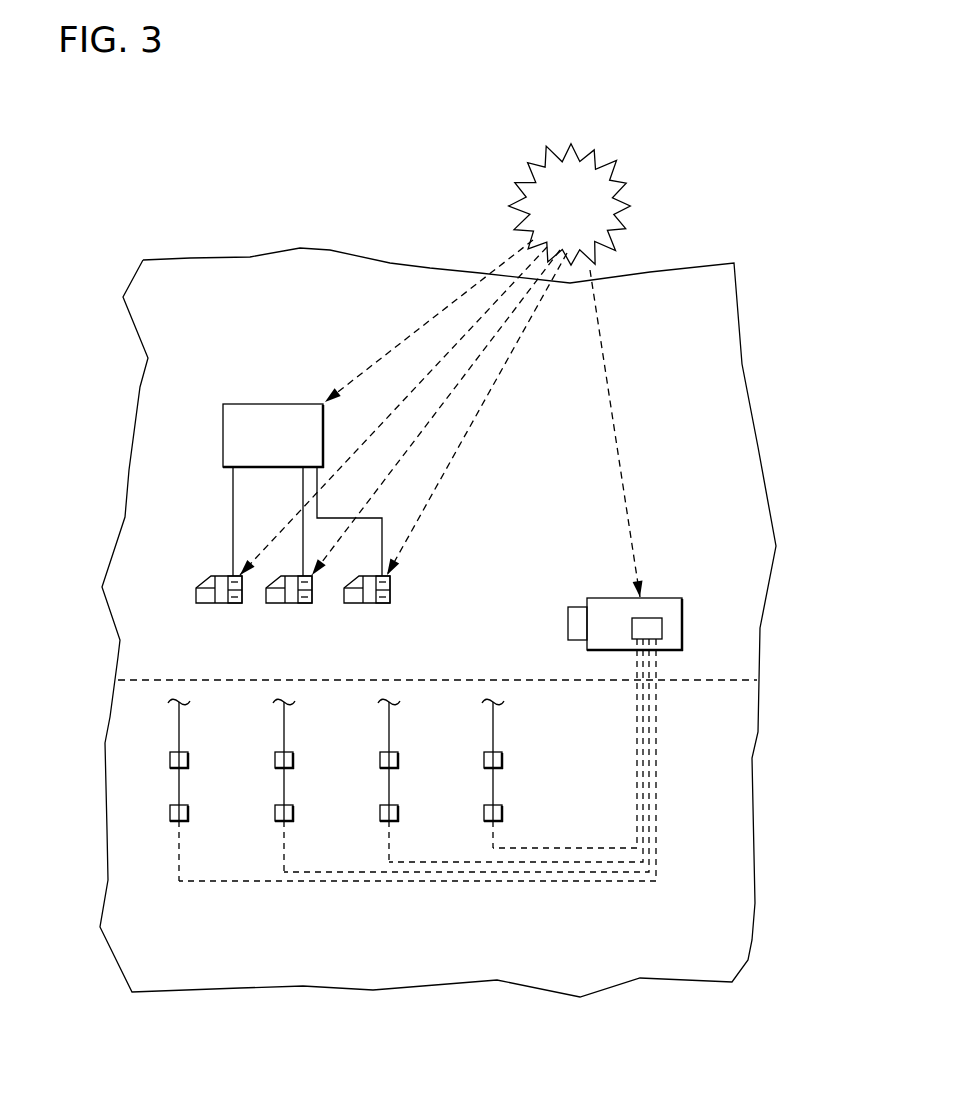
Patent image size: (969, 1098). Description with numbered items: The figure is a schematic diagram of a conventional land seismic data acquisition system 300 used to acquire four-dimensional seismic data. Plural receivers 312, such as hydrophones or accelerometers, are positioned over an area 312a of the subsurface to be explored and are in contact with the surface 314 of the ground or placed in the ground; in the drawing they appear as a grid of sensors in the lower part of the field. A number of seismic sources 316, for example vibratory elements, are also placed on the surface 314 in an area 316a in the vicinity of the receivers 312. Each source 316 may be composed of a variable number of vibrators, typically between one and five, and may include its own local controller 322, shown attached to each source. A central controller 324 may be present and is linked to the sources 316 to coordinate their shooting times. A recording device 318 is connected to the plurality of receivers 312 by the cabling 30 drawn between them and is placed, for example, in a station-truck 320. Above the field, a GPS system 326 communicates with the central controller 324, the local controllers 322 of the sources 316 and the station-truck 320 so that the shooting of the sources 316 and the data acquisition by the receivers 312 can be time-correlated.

The system 300 is at (376, 192).
The GPS system 326 is at (605, 167).
The central controller 324 is at (235, 404).
The seismic sources 316 is at (212, 604).
The local controller 322 is at (238, 604).
The station-truck 320 is at (677, 583).
The recording device 318 is at (658, 628).
The surface 314 is at (90, 611).
The area 316a is at (733, 468).
The area 312a is at (715, 888).
The receivers 312 is at (484, 812).
The control wiring 30 is at (636, 704).